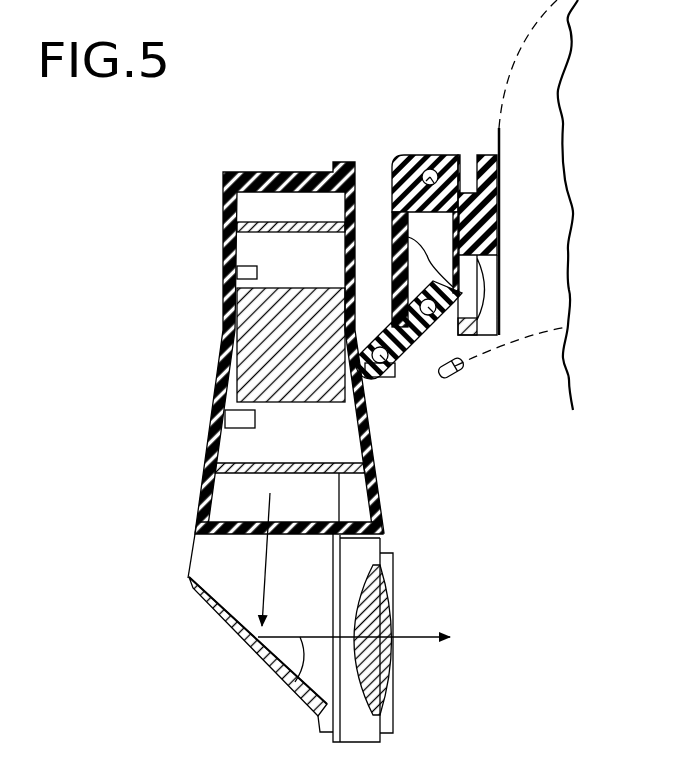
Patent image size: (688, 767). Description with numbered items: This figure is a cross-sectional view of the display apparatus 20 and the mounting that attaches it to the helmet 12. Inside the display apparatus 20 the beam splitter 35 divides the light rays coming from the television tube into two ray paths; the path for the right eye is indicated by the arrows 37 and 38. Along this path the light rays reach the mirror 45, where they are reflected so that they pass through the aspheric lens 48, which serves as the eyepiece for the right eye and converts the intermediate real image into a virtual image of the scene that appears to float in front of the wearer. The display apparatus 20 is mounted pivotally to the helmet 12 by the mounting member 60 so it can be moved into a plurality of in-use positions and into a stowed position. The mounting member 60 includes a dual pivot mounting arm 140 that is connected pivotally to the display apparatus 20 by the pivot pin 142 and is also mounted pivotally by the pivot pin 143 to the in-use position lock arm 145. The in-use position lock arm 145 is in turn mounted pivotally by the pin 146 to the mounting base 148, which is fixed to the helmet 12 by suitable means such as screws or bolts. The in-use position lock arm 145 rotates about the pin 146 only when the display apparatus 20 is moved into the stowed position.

The helmet 12 is at (527, 38).
The display apparatus 20 is at (204, 388).
The beam splitter 35 is at (261, 324).
The arrow indicating ray path 37 is at (262, 552).
The arrow indicating ray path 38 is at (299, 678).
The mirror 45 is at (230, 600).
The aspheric lens 48 is at (395, 652).
The mounting member 60 is at (423, 146).
The dual pivot mounting arm 140 is at (421, 343).
The pivot pin 142 is at (392, 380).
The pivot pin 143 is at (465, 368).
The in-use position lock arm 145 is at (391, 217).
The pin 146 is at (439, 156).
The mounting base 148 is at (446, 157).